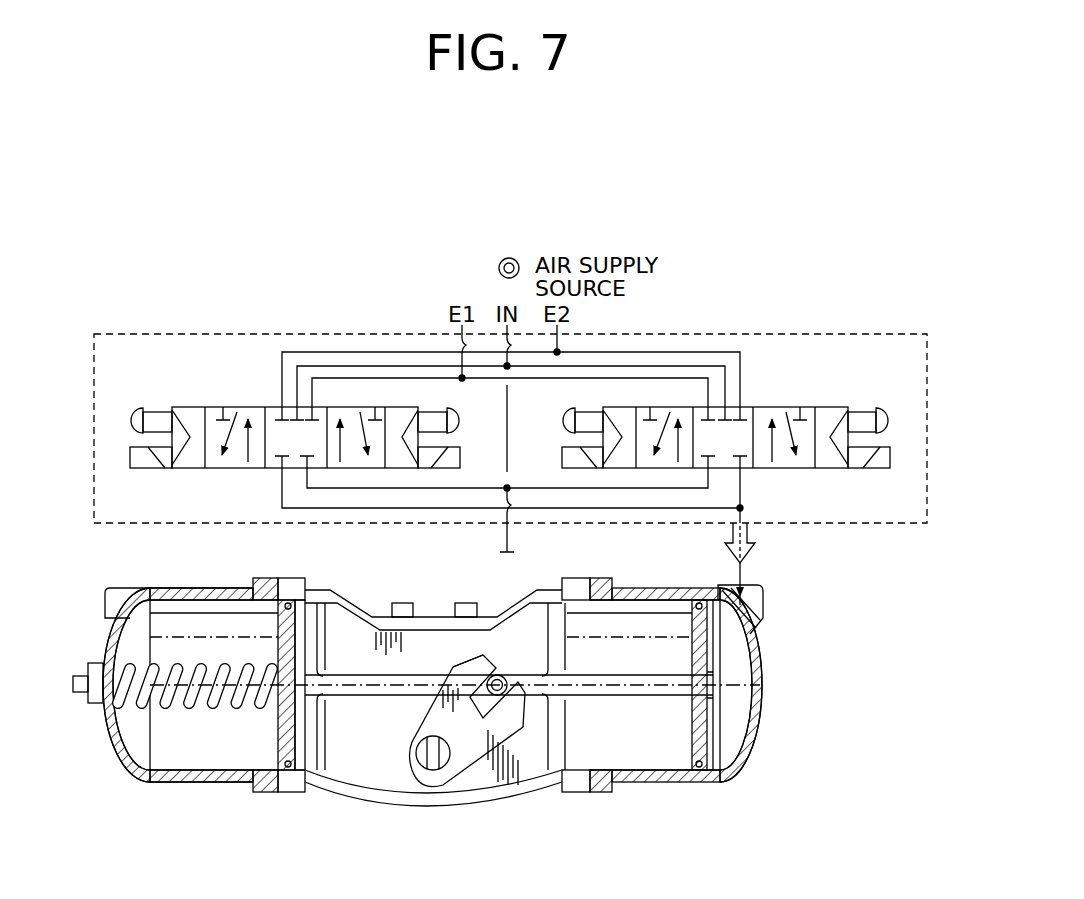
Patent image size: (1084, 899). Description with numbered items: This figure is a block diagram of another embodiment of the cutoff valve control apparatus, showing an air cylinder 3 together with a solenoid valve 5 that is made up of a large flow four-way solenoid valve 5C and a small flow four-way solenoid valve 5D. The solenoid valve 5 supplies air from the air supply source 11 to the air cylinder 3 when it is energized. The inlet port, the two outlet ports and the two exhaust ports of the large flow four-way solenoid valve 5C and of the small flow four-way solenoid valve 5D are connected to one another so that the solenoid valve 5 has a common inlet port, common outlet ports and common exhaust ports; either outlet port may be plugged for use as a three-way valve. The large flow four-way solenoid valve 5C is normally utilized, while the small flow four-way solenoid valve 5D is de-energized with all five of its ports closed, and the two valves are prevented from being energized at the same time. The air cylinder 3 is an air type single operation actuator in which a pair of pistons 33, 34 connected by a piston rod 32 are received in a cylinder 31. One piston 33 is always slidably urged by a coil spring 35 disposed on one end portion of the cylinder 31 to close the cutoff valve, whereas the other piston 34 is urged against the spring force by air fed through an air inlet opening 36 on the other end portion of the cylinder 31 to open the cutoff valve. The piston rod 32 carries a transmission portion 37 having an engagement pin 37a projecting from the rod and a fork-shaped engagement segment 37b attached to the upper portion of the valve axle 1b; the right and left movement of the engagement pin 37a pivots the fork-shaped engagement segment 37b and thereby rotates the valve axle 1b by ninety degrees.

The air supply source 11 is at (509, 257).
The solenoid valve 5 is at (778, 334).
The small flow four-way solenoid valve 5D is at (235, 407).
The large flow four-way solenoid valve 5C is at (812, 407).
The air cylinder 3 is at (487, 800).
The cylinder 31 is at (765, 695).
The piston rod 32 is at (357, 697).
The piston 33 is at (277, 741).
The piston 34 is at (710, 734).
The coil spring 35 is at (142, 706).
The air inlet opening 36 is at (752, 607).
The transmission portion 37 is at (490, 714).
The engagement pin 37a is at (505, 672).
The fork-shaped engagement segment 37b is at (455, 665).
The valve axle 1b is at (437, 772).